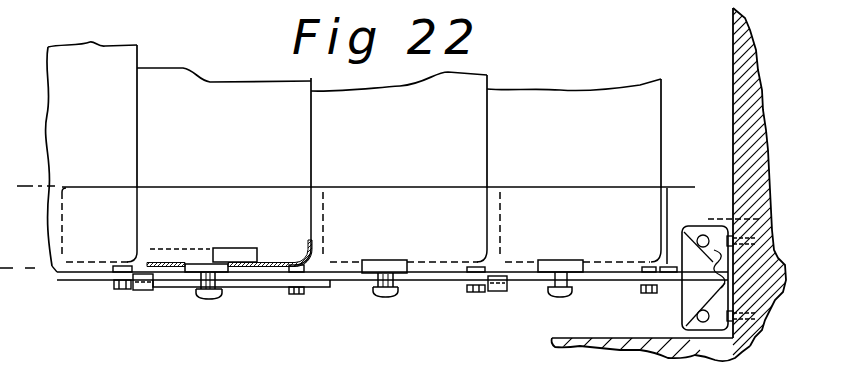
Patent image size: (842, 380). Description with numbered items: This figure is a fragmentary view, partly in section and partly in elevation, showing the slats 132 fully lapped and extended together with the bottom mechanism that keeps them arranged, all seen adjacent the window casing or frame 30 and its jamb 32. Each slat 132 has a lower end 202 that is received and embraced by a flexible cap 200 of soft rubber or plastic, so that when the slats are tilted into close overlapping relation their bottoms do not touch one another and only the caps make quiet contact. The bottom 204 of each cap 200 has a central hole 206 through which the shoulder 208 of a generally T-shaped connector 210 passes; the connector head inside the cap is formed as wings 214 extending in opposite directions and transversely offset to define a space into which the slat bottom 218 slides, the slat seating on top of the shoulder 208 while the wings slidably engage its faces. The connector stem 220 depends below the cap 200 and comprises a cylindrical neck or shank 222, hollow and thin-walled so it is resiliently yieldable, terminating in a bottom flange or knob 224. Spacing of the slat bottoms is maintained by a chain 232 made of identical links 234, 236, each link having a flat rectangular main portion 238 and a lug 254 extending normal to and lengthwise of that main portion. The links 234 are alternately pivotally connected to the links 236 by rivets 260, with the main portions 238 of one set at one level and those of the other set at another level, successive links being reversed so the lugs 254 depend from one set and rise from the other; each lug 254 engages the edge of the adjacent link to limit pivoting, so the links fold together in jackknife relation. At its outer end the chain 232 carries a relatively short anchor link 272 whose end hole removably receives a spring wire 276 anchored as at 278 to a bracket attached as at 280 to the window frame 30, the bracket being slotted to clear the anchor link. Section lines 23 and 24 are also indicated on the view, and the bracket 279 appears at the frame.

The section line 23 is at (16, 263).
The section line 24 is at (24, 182).
The window casing or frame 30 is at (726, 39).
The jamb 32 is at (731, 143).
The slats 132 is at (306, 77).
The flexible caps 200 is at (323, 187).
The lower ends 202 is at (51, 211).
The bottom 204 is at (140, 238).
The central hole 206 is at (217, 277).
The shoulder 208 is at (194, 287).
The T-shaped connector 210 is at (184, 274).
The wings 214 is at (208, 260).
The slat bottom 218 is at (157, 262).
The connector stem 220 is at (209, 306).
The shank 222 is at (216, 292).
The bottom flange or knob 224 is at (219, 292).
The chain 232 is at (598, 329).
The links 234 is at (298, 296).
The links 236 is at (453, 285).
The main portion 238 is at (284, 293).
The lug 254 is at (138, 291).
The rivets 260 is at (117, 288).
The anchor link 272 is at (630, 259).
The spring wire 276 is at (673, 232).
The anchorage of spring wire 278 is at (687, 321).
The wall bracket 279 is at (711, 209).
The attachment of bracket 280 is at (733, 288).